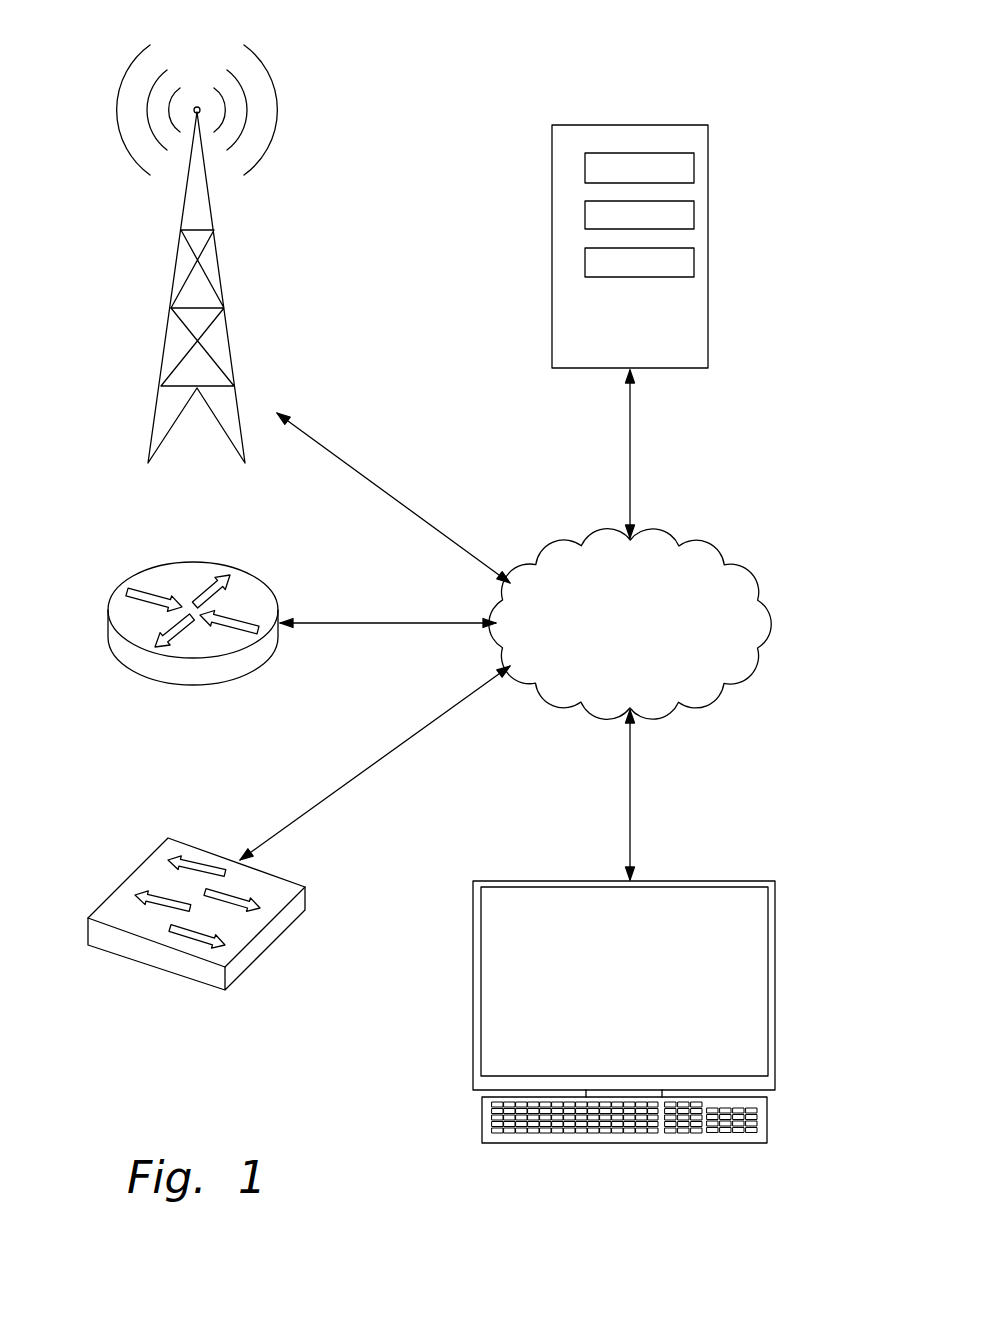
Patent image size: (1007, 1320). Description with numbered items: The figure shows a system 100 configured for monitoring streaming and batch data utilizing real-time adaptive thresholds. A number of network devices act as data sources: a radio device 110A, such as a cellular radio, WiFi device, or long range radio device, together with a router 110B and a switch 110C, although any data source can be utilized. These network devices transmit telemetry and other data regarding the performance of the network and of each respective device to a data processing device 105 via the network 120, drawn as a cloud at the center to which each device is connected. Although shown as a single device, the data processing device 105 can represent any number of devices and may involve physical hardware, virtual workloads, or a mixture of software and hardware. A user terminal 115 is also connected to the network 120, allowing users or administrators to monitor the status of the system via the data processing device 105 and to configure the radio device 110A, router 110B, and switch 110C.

The system 100 is at (762, 56).
The data processing device 105 is at (708, 322).
The radio device 110A is at (165, 351).
The router 110B is at (108, 616).
The switch 110C is at (117, 893).
The user terminal 115 is at (775, 972).
The network 120 is at (763, 620).